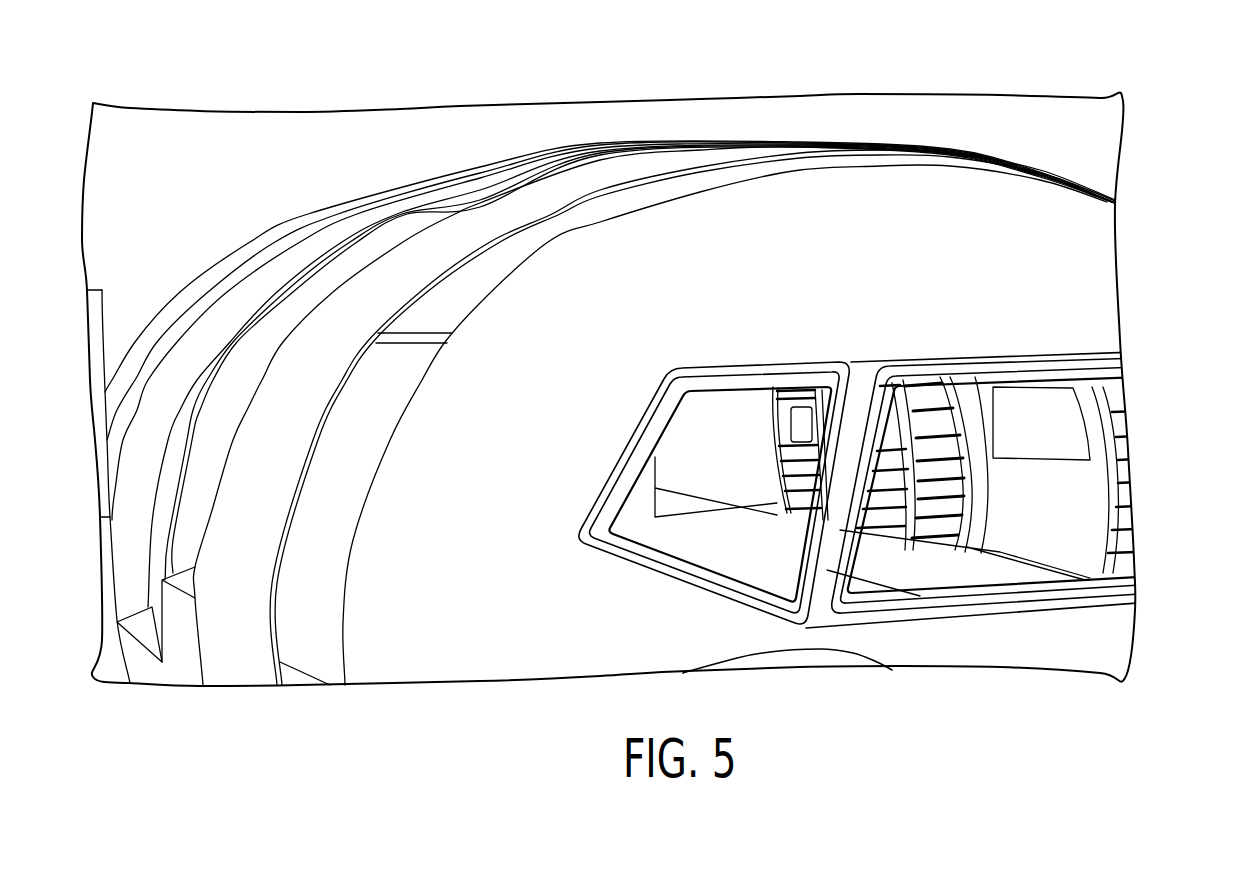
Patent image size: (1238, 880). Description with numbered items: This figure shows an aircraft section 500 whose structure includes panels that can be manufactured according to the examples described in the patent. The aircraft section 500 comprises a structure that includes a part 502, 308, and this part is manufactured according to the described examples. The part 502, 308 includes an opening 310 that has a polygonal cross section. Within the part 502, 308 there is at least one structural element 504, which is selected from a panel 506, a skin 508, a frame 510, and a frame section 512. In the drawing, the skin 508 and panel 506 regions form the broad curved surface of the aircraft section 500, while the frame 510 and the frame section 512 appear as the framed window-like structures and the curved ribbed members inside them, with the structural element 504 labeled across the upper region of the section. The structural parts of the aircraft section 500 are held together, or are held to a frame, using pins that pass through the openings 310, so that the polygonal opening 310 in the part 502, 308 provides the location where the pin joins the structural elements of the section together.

The aircraft section 500 is at (1165, 193).
The opening 310 is at (755, 197).
The part 502 is at (263, 514).
The part 308 is at (208, 487).
The structural element 504 is at (834, 224).
The panel 506 is at (690, 314).
The skin 508 is at (901, 313).
The frame 510 is at (627, 563).
The frame section 512 is at (975, 520).